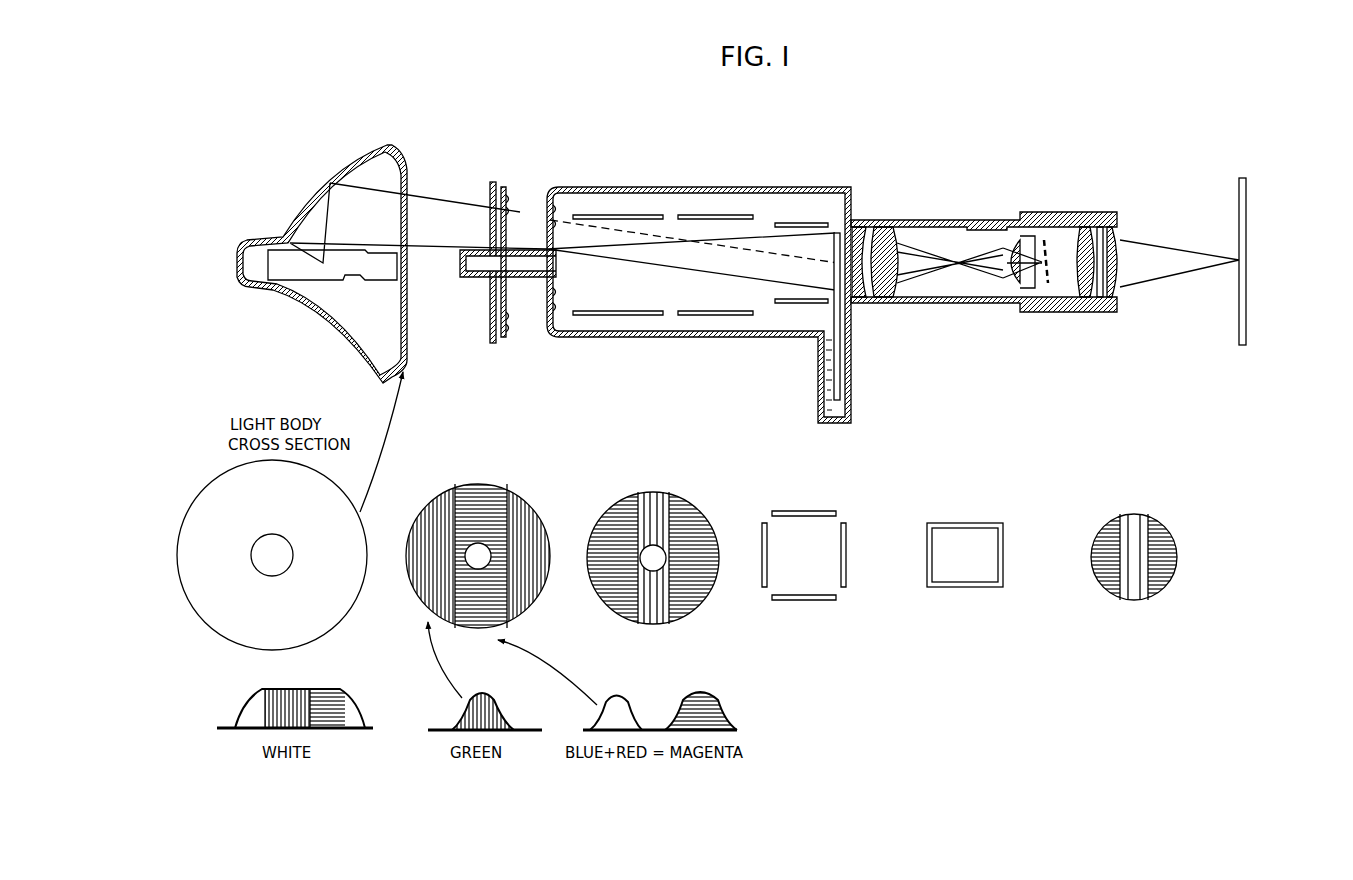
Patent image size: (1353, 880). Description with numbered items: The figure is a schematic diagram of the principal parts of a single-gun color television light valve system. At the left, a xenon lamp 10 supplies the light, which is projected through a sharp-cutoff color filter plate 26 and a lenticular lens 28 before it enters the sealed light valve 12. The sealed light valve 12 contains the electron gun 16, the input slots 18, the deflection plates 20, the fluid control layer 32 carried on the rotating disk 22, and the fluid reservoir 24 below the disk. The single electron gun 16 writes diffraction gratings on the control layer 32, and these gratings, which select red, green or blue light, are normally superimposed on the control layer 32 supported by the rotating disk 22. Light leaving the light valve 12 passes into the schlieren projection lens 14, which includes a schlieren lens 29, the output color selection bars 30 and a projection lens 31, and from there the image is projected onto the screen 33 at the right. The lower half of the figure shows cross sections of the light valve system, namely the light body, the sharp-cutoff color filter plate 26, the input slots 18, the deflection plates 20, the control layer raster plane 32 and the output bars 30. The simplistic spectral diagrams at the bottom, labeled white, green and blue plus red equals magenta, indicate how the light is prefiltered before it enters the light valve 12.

The xenon lamp 10 is at (365, 152).
The sealed light valve 12 is at (767, 187).
The schlieren projection lens 14 is at (1003, 167).
The electron gun 16 is at (473, 247).
The input slots 18 is at (557, 343).
The deflection plates 20 is at (743, 320).
The rotating disk 22 is at (850, 320).
The fluid reservoir 24 is at (830, 380).
The sharp-cutoff color filter plate 26 is at (453, 477).
The lenticular lens 28 is at (510, 190).
The schlieren lens 29 is at (890, 227).
The output color selection bars 30 is at (1053, 280).
The projection lens 31 is at (1107, 227).
The control layer 32 is at (827, 275).
The screen 33 is at (1267, 160).